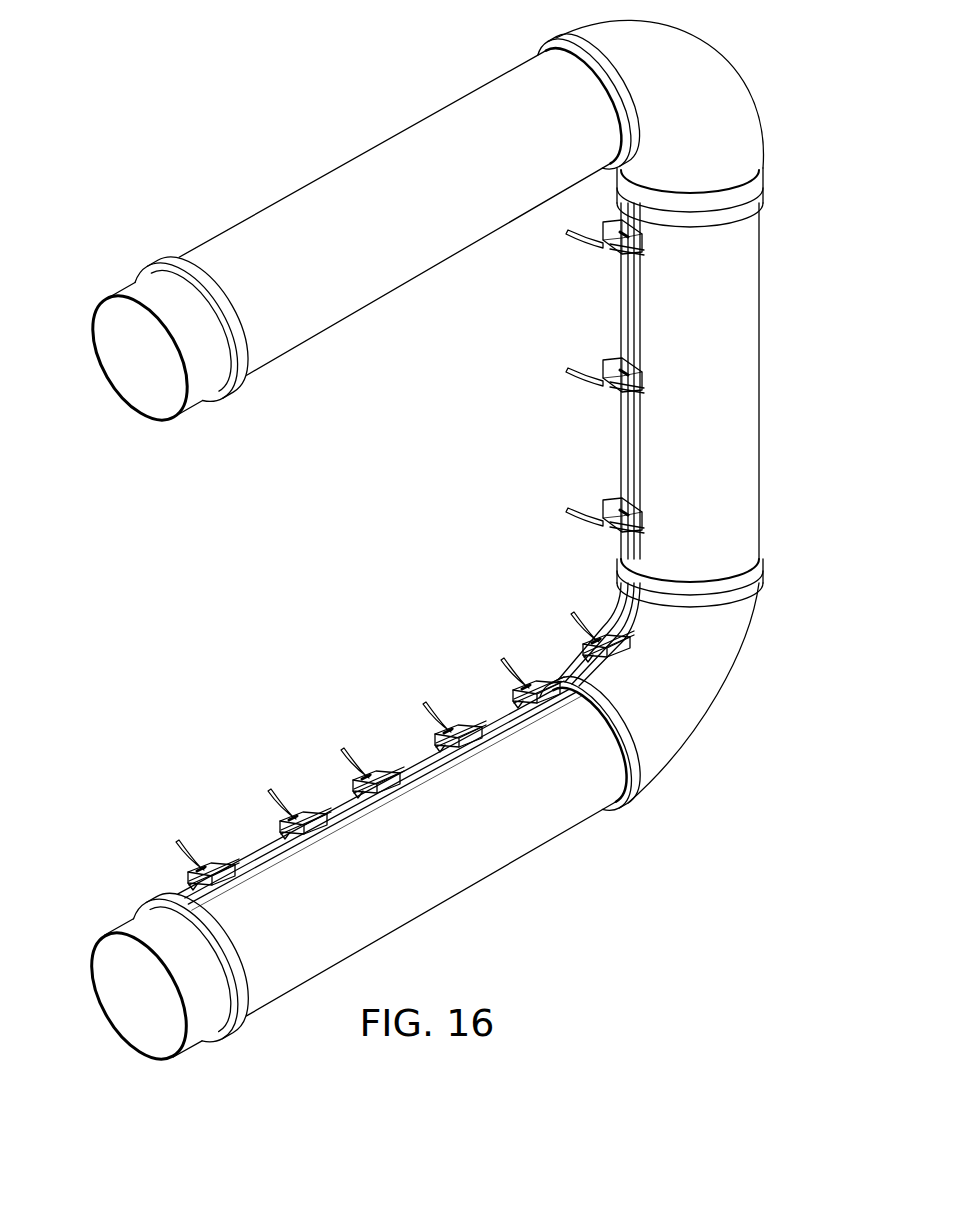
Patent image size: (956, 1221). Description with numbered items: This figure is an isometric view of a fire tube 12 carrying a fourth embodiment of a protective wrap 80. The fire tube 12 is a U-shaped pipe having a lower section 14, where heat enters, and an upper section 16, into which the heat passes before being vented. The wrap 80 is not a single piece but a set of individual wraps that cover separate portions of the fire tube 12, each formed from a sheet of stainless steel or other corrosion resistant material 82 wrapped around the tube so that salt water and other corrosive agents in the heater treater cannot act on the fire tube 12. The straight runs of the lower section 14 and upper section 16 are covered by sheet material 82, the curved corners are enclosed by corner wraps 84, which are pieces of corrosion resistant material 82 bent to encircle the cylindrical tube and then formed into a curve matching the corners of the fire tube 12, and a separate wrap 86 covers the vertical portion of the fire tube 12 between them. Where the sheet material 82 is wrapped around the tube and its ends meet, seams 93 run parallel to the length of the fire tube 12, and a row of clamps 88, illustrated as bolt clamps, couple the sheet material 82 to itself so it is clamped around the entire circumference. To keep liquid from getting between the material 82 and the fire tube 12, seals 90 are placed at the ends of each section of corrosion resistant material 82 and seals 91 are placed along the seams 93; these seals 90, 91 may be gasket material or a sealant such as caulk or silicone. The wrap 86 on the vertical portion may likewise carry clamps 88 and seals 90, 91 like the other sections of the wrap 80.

The wrap 80 is at (171, 199).
The corrosion resistant material 82 is at (300, 196).
The corner wraps 84 is at (746, 118).
The wrap 86 is at (746, 376).
The clamps 88 is at (606, 254).
The seals 90 is at (565, 40).
The seals 91 is at (346, 806).
The seams 93 is at (426, 750).
The fire tube 12 is at (201, 1032).
The lower section 14 is at (150, 924).
The upper section 16 is at (198, 392).